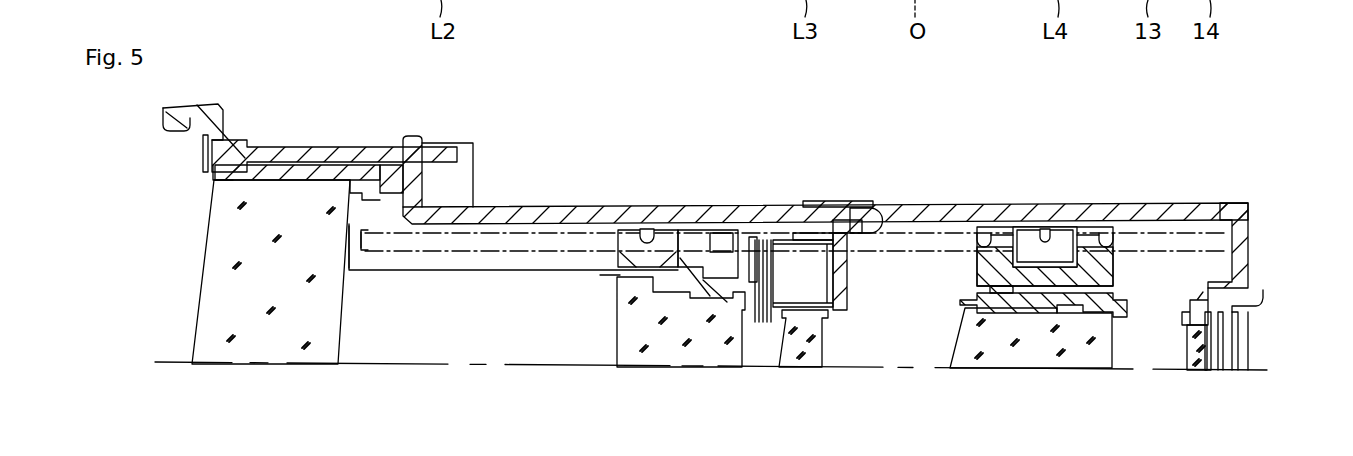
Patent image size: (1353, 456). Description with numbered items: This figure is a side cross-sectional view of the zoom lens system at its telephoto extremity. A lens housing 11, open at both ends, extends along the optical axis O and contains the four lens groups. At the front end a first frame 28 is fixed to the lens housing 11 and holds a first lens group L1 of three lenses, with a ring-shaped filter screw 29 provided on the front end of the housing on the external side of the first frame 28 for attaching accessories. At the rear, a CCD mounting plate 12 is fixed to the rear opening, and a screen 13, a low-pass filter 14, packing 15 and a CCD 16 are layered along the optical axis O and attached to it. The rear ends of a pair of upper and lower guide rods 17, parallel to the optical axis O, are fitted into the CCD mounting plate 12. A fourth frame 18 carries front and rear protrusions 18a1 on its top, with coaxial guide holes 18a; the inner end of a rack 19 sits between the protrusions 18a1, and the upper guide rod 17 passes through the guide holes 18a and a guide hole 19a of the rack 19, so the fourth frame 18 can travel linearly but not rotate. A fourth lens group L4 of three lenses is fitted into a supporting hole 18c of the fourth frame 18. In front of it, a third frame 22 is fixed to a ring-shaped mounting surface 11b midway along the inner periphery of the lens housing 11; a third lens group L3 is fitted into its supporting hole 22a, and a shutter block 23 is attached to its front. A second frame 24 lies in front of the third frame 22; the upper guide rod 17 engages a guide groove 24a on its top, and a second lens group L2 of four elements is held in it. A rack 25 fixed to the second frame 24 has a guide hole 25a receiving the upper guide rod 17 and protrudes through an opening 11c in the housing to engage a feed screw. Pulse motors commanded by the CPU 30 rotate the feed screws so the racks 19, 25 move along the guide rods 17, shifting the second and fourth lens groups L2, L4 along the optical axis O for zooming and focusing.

The lens housing 11 is at (508, 212).
The ring-shaped mounting surface 11b is at (848, 210).
The opening 11c is at (468, 262).
The CCD mounting plate 12 is at (1243, 240).
The screen 13 is at (1188, 332).
The low-pass filter 14 is at (1196, 372).
The packing 15 is at (1196, 311).
The CCD 16 is at (1247, 342).
The guide rods 17 is at (905, 255).
The fourth frame 18 is at (987, 265).
The guide holes 18a is at (977, 237).
The protrusions 18a1 is at (998, 230).
The supporting hole 18c is at (975, 306).
The rack 19 is at (1062, 233).
The guide hole 19a is at (1043, 237).
The third frame 22 is at (838, 292).
The supporting hole 22a is at (806, 328).
The shutter block 23 is at (822, 270).
The second frame 24 is at (617, 280).
The guide groove 24a is at (722, 250).
The rack 25 is at (640, 262).
The guide hole 25a is at (644, 243).
The first frame 28 is at (240, 180).
The filter screw 29 is at (313, 150).
The CPU 30 is at (204, 158).
The first lens group L1 is at (210, 300).
The second lens group L2 is at (681, 322).
The third lens group L3 is at (790, 330).
The fourth lens group L4 is at (1038, 370).
The optical axis O is at (919, 368).